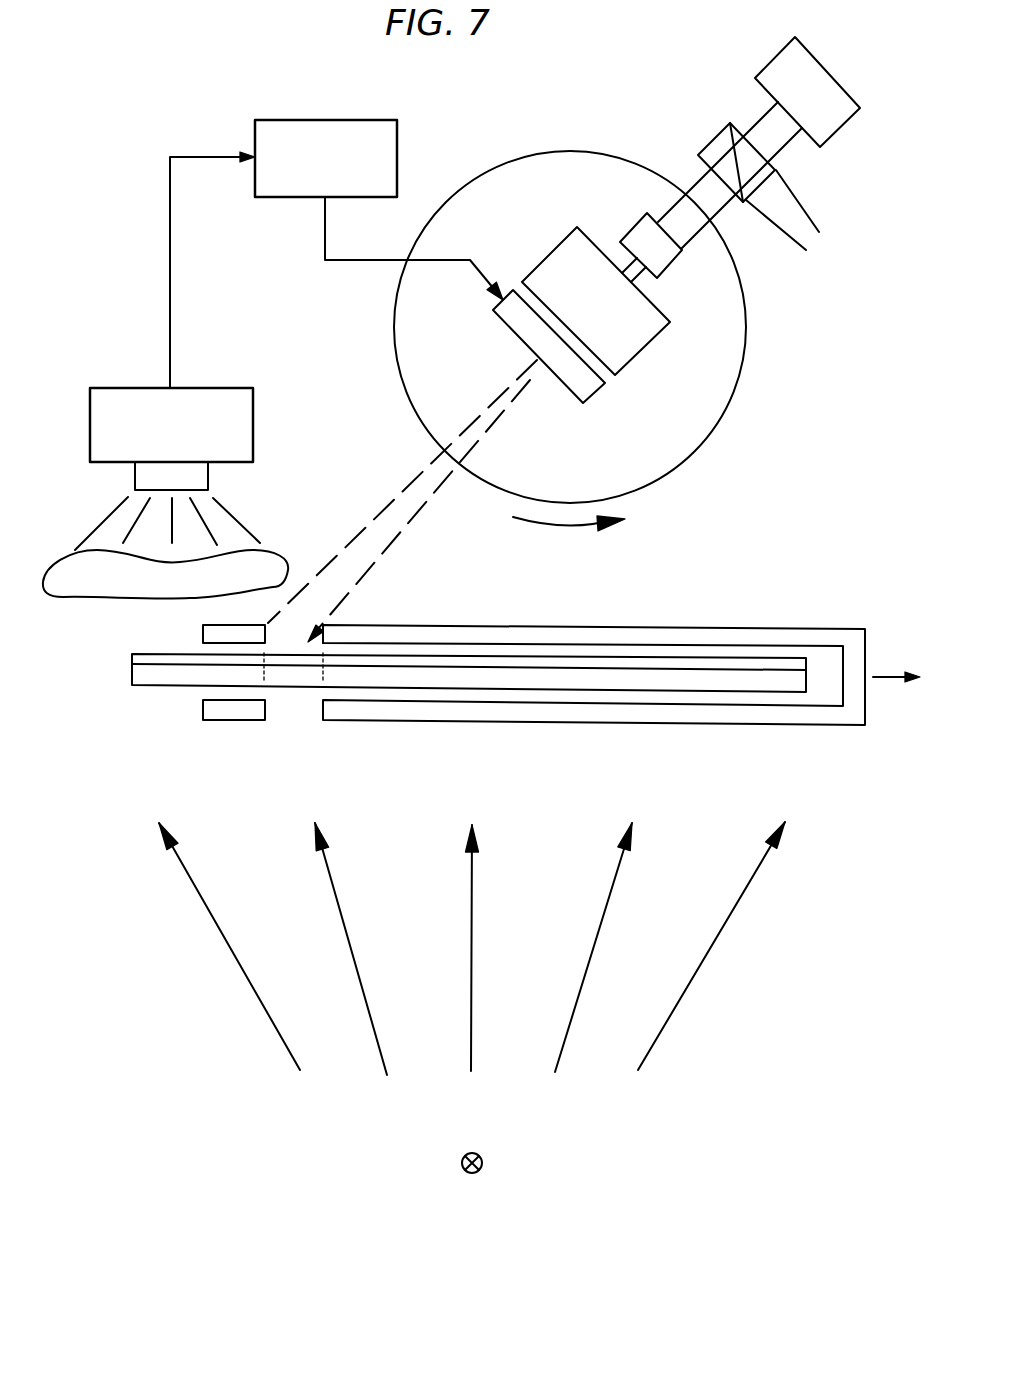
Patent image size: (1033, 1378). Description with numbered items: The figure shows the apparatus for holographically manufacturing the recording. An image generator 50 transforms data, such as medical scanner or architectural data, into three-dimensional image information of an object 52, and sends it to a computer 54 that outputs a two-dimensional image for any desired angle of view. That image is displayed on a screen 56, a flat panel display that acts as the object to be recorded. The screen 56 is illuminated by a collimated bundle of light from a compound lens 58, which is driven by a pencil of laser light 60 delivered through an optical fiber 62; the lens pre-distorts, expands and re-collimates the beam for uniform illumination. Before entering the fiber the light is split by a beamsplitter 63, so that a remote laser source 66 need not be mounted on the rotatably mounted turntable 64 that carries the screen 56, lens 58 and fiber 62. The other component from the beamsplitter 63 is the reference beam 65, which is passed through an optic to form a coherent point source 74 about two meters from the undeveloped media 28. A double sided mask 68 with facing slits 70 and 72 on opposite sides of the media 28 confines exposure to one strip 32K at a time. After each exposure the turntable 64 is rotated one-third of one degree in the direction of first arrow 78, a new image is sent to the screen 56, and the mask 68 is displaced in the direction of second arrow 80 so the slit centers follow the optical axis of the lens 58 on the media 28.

The undeveloped media 28 is at (132, 656).
The strip 32K is at (322, 624).
The image generator 50 is at (213, 388).
The object 52 is at (280, 550).
The computer 54 is at (295, 197).
The screen 56 is at (577, 388).
The compound lens 58 is at (650, 320).
The pencil of laser light 60 is at (619, 248).
The optical fiber 62 is at (693, 196).
The beamsplitter 63 is at (720, 136).
The turntable 64 is at (722, 396).
The reference beam 65 is at (803, 212).
The laser source 66 is at (833, 136).
The double sided mask 68 is at (612, 714).
The slit 70 is at (290, 625).
The slit 72 is at (293, 720).
The coherent point source 74 is at (483, 1160).
The first arrow 78 is at (543, 527).
The second arrow 80 is at (890, 681).